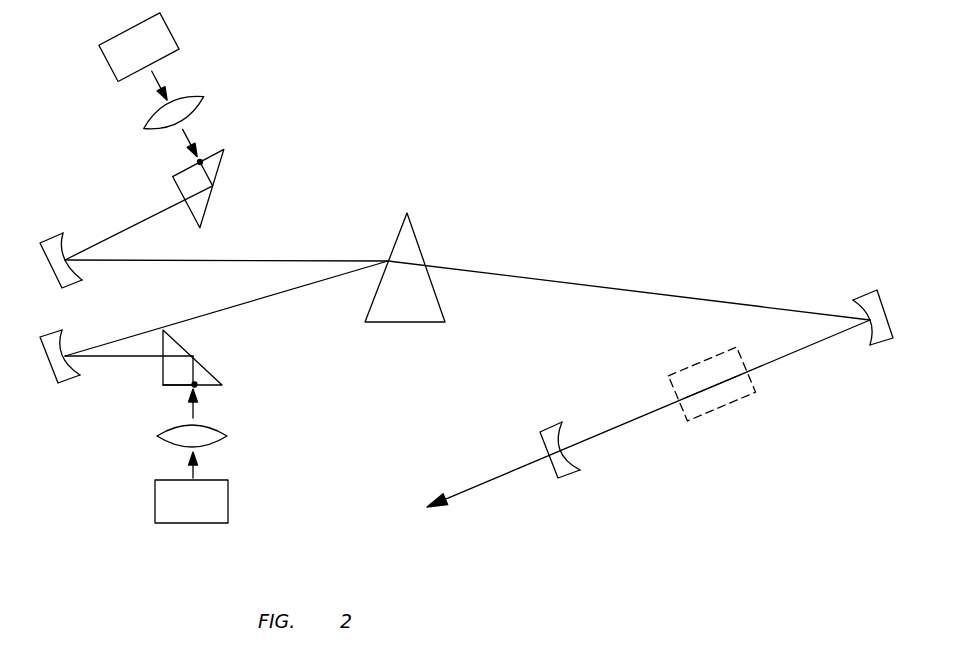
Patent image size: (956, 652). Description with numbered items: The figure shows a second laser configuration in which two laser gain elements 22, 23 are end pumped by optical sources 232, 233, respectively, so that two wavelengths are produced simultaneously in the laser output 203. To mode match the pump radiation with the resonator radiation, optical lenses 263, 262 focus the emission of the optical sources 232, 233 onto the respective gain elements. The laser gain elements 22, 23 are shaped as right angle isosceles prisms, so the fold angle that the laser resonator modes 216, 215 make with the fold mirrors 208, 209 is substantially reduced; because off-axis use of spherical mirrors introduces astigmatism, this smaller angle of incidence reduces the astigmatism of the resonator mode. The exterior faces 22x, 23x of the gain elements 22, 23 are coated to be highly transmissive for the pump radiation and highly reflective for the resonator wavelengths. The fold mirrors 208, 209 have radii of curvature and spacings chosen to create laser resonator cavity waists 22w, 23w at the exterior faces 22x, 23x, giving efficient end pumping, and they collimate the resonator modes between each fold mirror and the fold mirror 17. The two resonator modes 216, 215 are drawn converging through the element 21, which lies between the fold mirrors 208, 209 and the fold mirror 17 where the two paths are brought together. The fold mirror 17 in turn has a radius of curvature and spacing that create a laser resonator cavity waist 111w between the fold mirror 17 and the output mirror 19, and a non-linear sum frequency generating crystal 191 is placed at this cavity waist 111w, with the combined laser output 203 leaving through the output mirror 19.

The optical source 232 is at (171, 30).
The optical lens 263 is at (205, 98).
The laser gain element 22 is at (217, 182).
The laser resonator cavity waist 22w is at (206, 164).
The exterior face 22x is at (201, 161).
The fold mirror 208 is at (53, 237).
The fold mirror 209 is at (50, 330).
The laser resonator mode 216 is at (233, 260).
The laser resonator mode 215 is at (227, 310).
The dispersing prism 21 is at (407, 243).
The optical source 233 is at (155, 503).
The optical lens 262 is at (157, 437).
The laser gain element 23 is at (207, 381).
The laser resonator cavity waist 23w is at (197, 386).
The exterior face 23x is at (180, 387).
The fold mirror 17 is at (865, 290).
The laser output 203 is at (629, 426).
The non-linear sum frequency generating crystal 191 is at (713, 412).
The laser resonator cavity waist 111w is at (708, 387).
The output mirror 19 is at (570, 478).